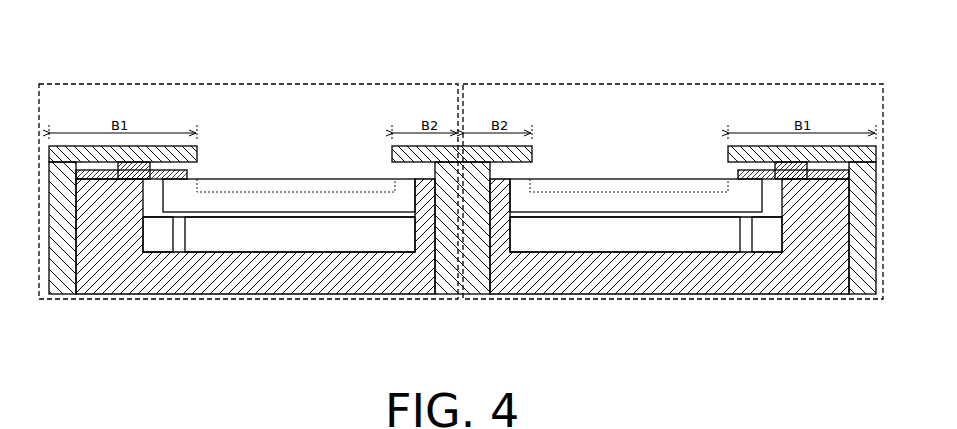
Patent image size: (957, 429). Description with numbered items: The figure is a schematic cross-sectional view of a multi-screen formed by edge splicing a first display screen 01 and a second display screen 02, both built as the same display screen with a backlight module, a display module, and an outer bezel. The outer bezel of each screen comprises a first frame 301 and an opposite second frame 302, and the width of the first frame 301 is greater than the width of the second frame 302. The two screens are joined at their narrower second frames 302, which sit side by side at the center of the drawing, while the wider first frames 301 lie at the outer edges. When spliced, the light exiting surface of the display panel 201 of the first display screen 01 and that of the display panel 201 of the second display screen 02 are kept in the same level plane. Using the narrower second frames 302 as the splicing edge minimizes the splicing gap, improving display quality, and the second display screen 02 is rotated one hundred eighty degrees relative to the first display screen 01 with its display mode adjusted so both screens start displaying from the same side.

The first display screen 01 is at (103, 82).
The second display screen 02 is at (827, 80).
The display panel 201 is at (275, 178).
The first frame 301 is at (66, 290).
The second frame 302 is at (440, 290).